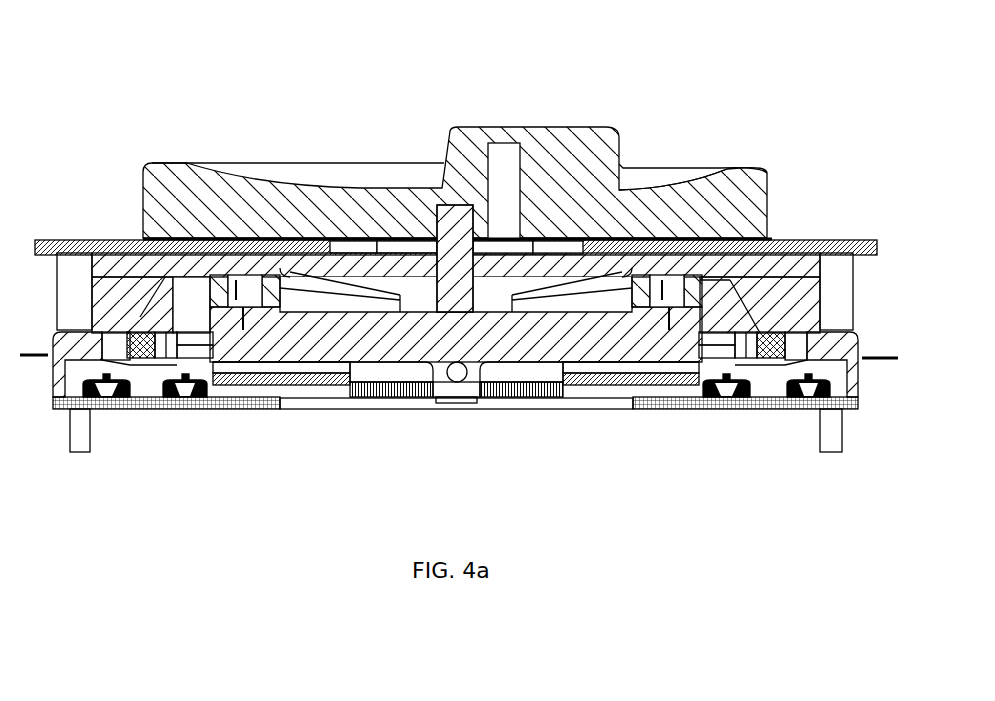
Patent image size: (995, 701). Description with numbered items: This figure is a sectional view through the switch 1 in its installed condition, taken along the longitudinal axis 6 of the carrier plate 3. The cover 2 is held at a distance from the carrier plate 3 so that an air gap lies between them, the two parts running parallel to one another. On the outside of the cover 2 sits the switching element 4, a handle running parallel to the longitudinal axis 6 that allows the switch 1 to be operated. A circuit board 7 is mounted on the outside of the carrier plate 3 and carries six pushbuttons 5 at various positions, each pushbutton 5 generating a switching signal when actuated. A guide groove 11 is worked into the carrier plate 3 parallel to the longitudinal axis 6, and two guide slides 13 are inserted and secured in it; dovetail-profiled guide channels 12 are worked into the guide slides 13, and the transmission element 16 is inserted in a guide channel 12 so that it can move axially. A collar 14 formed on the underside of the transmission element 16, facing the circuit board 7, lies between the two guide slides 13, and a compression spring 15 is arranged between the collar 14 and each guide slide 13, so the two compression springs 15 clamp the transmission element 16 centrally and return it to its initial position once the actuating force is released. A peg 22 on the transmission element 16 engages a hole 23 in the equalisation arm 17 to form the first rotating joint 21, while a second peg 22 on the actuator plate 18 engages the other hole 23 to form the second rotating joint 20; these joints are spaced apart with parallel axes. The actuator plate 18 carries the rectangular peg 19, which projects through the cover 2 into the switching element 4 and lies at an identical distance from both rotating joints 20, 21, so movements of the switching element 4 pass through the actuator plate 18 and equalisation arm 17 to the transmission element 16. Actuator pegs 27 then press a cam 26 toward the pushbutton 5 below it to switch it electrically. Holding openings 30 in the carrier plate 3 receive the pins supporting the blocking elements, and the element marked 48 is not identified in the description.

The switch 1 is at (704, 66).
The cover 2 is at (135, 247).
The carrier plate 3 is at (83, 347).
The switching element 4 is at (580, 137).
The pushbutton 5 is at (112, 368).
The longitudinal axis 6 is at (42, 375).
The circuit board 7 is at (502, 405).
The guide groove 11 is at (342, 367).
The guide channel 12 is at (768, 253).
The guide slide 13 is at (190, 347).
The collar 14 is at (438, 366).
The compression spring 15 is at (487, 397).
The transmission element 16 is at (527, 333).
The equalisation arm 17 is at (489, 222).
The actuator plate 18 is at (122, 280).
The peg 19 is at (452, 228).
The second rotating joint 20 is at (729, 169).
The first rotating joint 21 is at (261, 283).
The peg 22 is at (251, 288).
The hole 23 is at (225, 282).
The cam 26 is at (730, 365).
The actuator peg 27 is at (693, 365).
The holding opening 30 is at (455, 320).
The bushing 48 is at (144, 362).